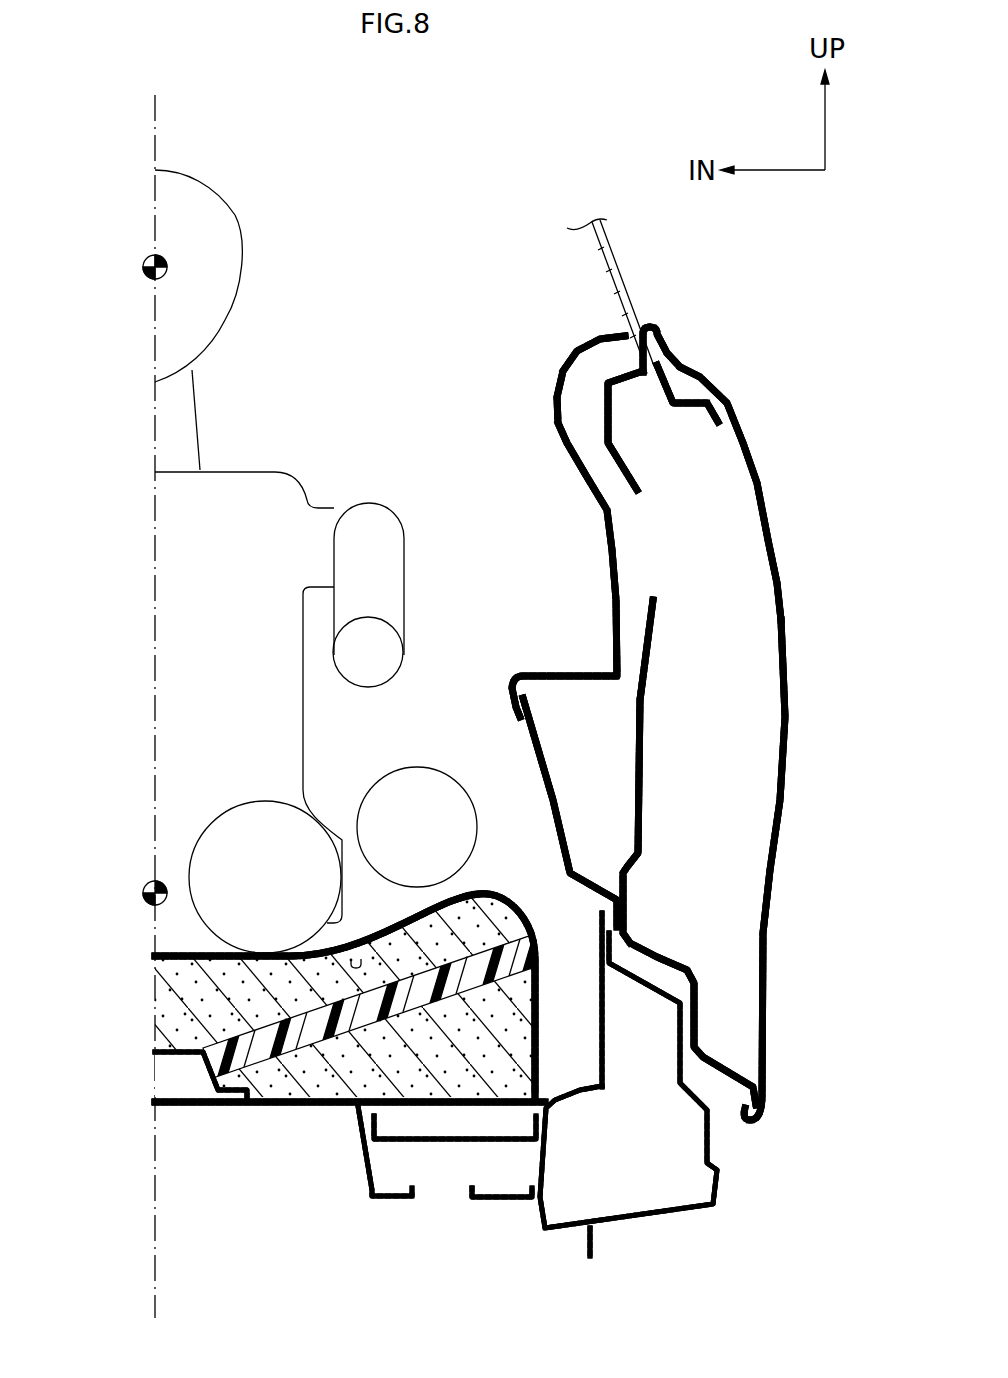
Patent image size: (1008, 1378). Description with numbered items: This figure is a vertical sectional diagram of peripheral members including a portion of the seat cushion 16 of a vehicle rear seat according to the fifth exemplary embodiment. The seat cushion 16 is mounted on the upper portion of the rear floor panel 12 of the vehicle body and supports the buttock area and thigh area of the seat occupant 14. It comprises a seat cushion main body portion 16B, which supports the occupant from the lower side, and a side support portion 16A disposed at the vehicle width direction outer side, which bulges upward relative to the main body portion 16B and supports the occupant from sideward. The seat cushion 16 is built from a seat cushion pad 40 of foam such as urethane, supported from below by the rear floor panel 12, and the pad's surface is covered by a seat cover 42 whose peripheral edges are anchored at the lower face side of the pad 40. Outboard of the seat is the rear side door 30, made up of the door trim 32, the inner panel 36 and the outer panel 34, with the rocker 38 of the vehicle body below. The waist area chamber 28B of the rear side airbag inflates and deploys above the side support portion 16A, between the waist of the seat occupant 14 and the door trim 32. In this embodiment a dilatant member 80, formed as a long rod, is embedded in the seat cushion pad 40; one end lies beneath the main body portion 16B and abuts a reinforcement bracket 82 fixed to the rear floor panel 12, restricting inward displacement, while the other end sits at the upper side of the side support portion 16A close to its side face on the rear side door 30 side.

The rear floor panel 12 is at (245, 1107).
The seat occupant 14 is at (253, 468).
The seat cushion 16 is at (302, 932).
The side support portion 16A is at (482, 893).
The seat cushion main body portion 16B is at (225, 957).
The waist area chamber 28B is at (420, 765).
The rear side door 30 is at (765, 503).
The door trim 32 is at (610, 543).
The outer panel 34 is at (787, 703).
The inner panel 36 is at (645, 713).
The rocker 38 is at (720, 1185).
The seat cushion pad 40 is at (167, 1000).
The seat cover 42 is at (187, 955).
The dilatant member 80 is at (515, 893).
The reinforcement bracket 82 is at (203, 1083).